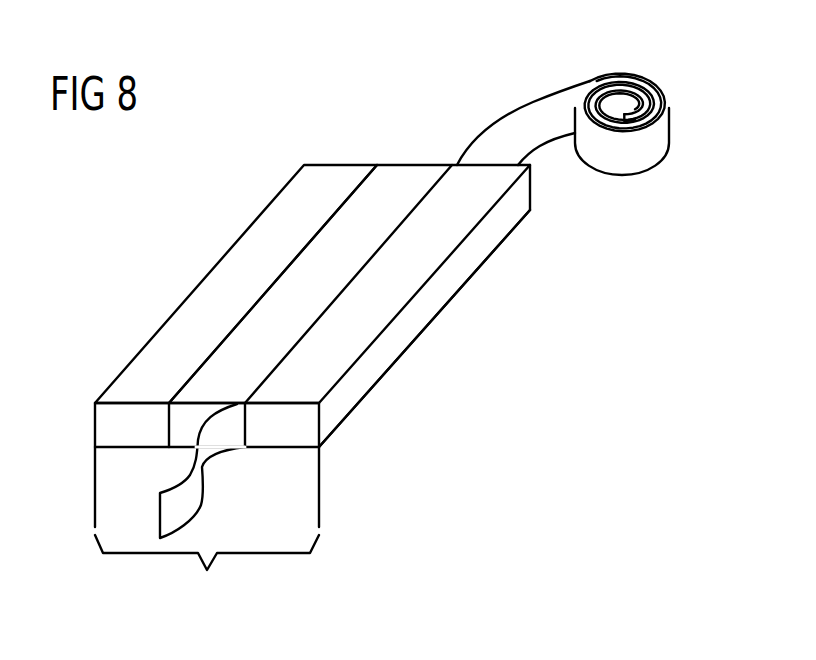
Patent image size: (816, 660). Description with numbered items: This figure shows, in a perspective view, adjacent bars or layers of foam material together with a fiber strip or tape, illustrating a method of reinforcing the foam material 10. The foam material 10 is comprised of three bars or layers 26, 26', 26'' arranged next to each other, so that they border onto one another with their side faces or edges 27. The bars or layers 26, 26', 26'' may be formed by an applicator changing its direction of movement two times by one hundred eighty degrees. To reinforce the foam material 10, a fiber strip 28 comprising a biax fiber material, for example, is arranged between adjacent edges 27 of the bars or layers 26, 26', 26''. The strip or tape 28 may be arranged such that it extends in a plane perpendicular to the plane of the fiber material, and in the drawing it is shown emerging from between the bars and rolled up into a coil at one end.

The foam material 10 is at (207, 530).
The bar or layer 26 is at (312, 287).
The bar or layer 26' is at (310, 241).
The bar or layer 26'' is at (424, 328).
The side faces or edges 27 is at (245, 403).
The fiber strip 28 is at (547, 115).